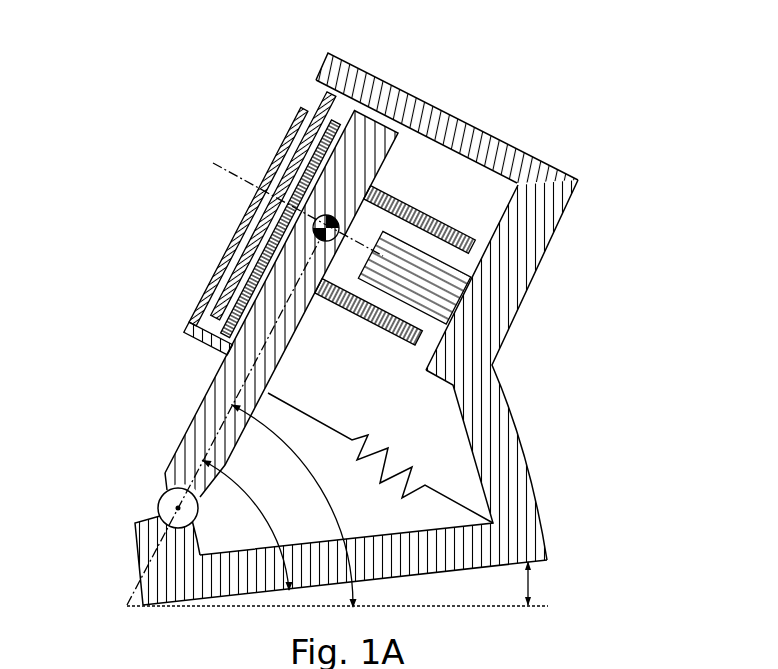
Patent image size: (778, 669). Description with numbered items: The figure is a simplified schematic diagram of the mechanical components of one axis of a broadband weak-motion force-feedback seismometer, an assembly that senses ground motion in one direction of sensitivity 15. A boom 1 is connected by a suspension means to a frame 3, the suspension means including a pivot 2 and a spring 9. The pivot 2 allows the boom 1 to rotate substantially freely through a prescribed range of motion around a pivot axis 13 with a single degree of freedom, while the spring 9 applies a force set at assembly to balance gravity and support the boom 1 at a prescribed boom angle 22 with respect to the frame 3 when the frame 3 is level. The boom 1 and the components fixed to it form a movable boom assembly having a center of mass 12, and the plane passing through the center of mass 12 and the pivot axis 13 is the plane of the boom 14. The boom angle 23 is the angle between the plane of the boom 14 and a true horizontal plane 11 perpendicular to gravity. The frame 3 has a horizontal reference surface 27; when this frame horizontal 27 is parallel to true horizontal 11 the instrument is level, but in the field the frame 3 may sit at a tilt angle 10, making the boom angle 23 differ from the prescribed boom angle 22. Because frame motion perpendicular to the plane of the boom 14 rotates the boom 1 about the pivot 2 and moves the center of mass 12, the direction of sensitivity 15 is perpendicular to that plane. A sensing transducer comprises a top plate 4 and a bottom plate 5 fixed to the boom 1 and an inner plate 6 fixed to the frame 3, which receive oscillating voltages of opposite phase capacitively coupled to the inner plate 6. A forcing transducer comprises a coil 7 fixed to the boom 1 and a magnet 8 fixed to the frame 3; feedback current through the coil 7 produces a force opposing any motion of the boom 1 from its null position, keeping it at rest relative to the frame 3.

The boom 1 is at (190, 468).
The pivot 2 is at (157, 500).
The frame 3 is at (152, 548).
The top plate 4 is at (283, 140).
The bottom plate 5 is at (357, 103).
The inner plate 6 is at (327, 93).
The coil 7 is at (410, 210).
The magnet 8 is at (433, 283).
The spring 9 is at (402, 470).
The tilt angle 10 is at (528, 586).
The true horizontal plane 11 is at (505, 607).
The center of mass 12 is at (314, 229).
The pivot axis 13 is at (180, 509).
The plane of the boom 14 is at (230, 405).
The direction of sensitivity 15 is at (240, 180).
The prescribed boom angle 22 is at (249, 525).
The boom angle 23 is at (296, 507).
The horizontal reference surface 27 is at (404, 583).